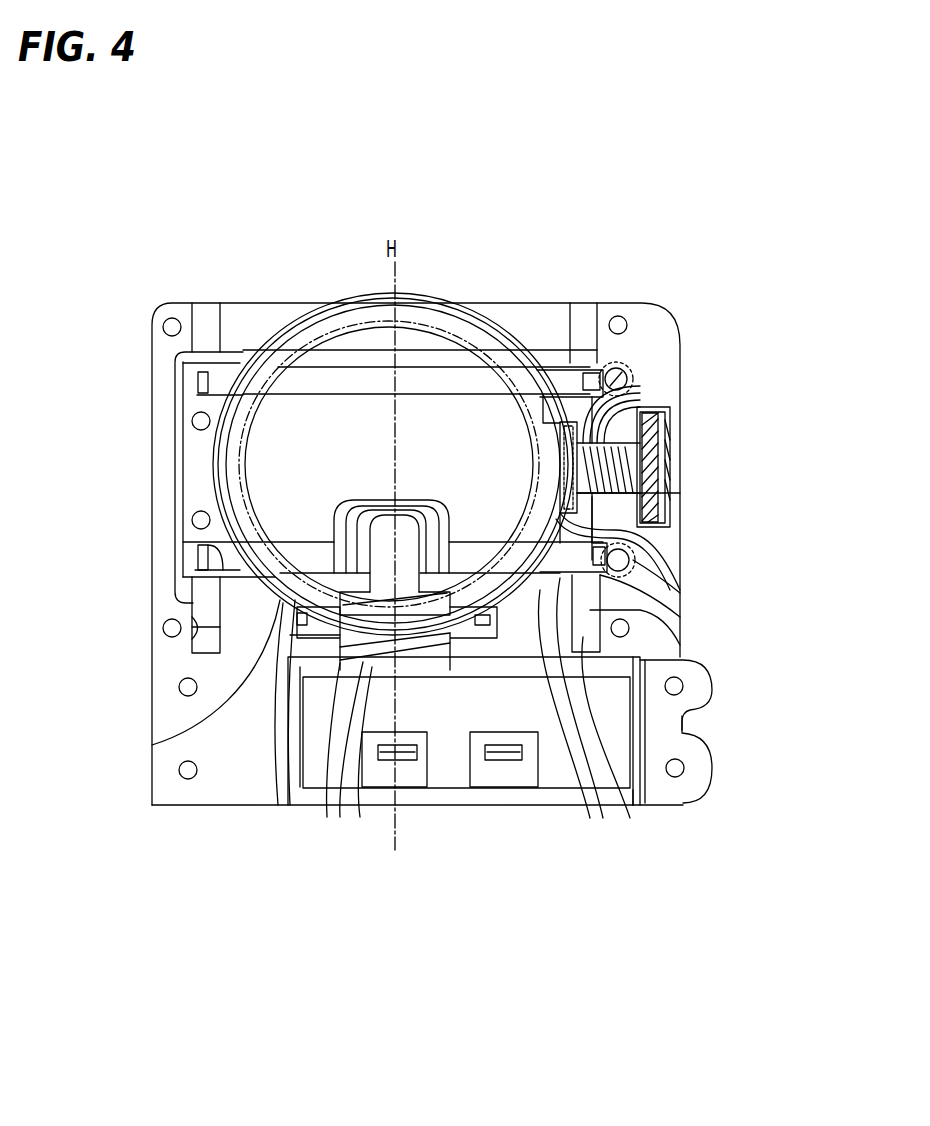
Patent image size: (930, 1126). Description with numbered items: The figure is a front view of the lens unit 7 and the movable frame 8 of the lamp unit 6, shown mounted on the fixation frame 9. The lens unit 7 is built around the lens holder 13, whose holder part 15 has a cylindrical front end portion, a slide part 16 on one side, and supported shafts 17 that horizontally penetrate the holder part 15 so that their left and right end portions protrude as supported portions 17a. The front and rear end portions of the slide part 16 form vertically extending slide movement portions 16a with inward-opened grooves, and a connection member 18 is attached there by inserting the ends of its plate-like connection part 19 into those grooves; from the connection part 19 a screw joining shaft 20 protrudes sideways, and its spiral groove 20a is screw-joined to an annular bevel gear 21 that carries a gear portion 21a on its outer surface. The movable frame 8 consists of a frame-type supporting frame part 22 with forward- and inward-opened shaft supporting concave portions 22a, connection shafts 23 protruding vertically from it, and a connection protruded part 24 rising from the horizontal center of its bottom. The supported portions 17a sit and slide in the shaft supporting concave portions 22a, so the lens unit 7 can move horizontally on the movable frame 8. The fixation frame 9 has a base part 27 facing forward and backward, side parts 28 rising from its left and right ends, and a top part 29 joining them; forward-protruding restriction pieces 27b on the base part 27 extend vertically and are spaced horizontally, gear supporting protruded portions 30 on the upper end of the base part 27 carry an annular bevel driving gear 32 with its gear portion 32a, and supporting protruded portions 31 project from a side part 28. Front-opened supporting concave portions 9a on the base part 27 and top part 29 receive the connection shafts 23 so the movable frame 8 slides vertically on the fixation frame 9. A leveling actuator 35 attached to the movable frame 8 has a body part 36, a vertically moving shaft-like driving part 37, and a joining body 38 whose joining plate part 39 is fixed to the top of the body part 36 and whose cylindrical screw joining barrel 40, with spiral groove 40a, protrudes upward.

The lamp unit 6 is at (712, 222).
The lens unit 7 is at (428, 315).
The movable frame 8 is at (470, 312).
The fixation frame 9 is at (523, 313).
The supporting concave portions 9a is at (203, 303).
The lens holder 13 is at (293, 300).
The holder part 15 is at (328, 307).
The slide part 16 is at (635, 558).
The slide movement portions 16a is at (640, 552).
The supported shafts 17 is at (410, 375).
The supported portions 17a is at (200, 390).
The connection member 18 is at (665, 405).
The connection part 19 is at (640, 400).
The screw joining shaft 20 is at (640, 420).
The spiral groove 20a is at (650, 425).
The gear 21 is at (648, 418).
The gear portion 21a is at (655, 435).
The supporting frame part 22 is at (508, 313).
The shaft supporting concave portions 22a is at (198, 380).
The connection shafts 23 is at (195, 303).
The connection protruded part 24 is at (376, 527).
The base part 27 is at (152, 768).
The restriction pieces 27b is at (290, 805).
The side parts 28 is at (152, 468).
The top part 29 is at (250, 303).
The gear supporting protruded portions 30 is at (280, 805).
The supporting protruded portions 31 is at (660, 412).
The driving gear 32 is at (480, 785).
The gear portion 32a is at (462, 785).
The leveling actuator 35 is at (345, 790).
The body part 36 is at (330, 790).
The driving part 37 is at (152, 742).
The joining body 38 is at (640, 672).
The joining plate part 39 is at (706, 700).
The screw joining barrel 40 is at (378, 790).
The spiral groove 40a is at (368, 800).